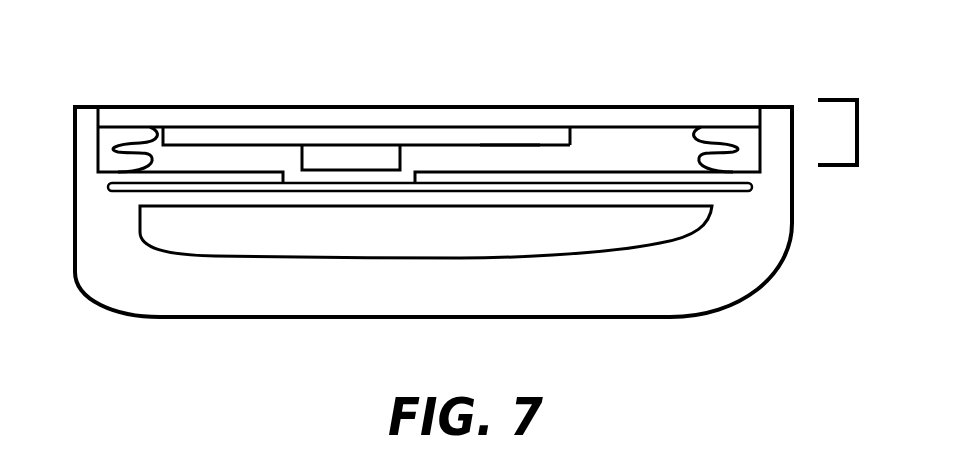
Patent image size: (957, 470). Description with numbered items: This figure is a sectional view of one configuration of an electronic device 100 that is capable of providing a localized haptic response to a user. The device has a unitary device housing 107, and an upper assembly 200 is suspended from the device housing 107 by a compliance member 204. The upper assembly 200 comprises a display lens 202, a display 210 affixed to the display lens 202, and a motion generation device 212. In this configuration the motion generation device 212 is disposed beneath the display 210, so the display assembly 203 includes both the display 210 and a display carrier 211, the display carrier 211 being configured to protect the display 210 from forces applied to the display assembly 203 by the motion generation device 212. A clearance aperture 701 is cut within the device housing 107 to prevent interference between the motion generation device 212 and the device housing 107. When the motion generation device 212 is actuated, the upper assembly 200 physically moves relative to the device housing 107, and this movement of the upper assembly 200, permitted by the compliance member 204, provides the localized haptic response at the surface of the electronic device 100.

The electronic device 100 is at (786, 266).
The device housing 107 is at (368, 285).
The upper assembly 200 is at (842, 98).
The display lens 202 is at (394, 117).
The display assembly 203 is at (576, 140).
The compliance member 204 is at (733, 145).
The display 210 is at (209, 135).
The display carrier 211 is at (503, 143).
The motion generation device 212 is at (330, 158).
The clearance aperture 701 is at (342, 182).